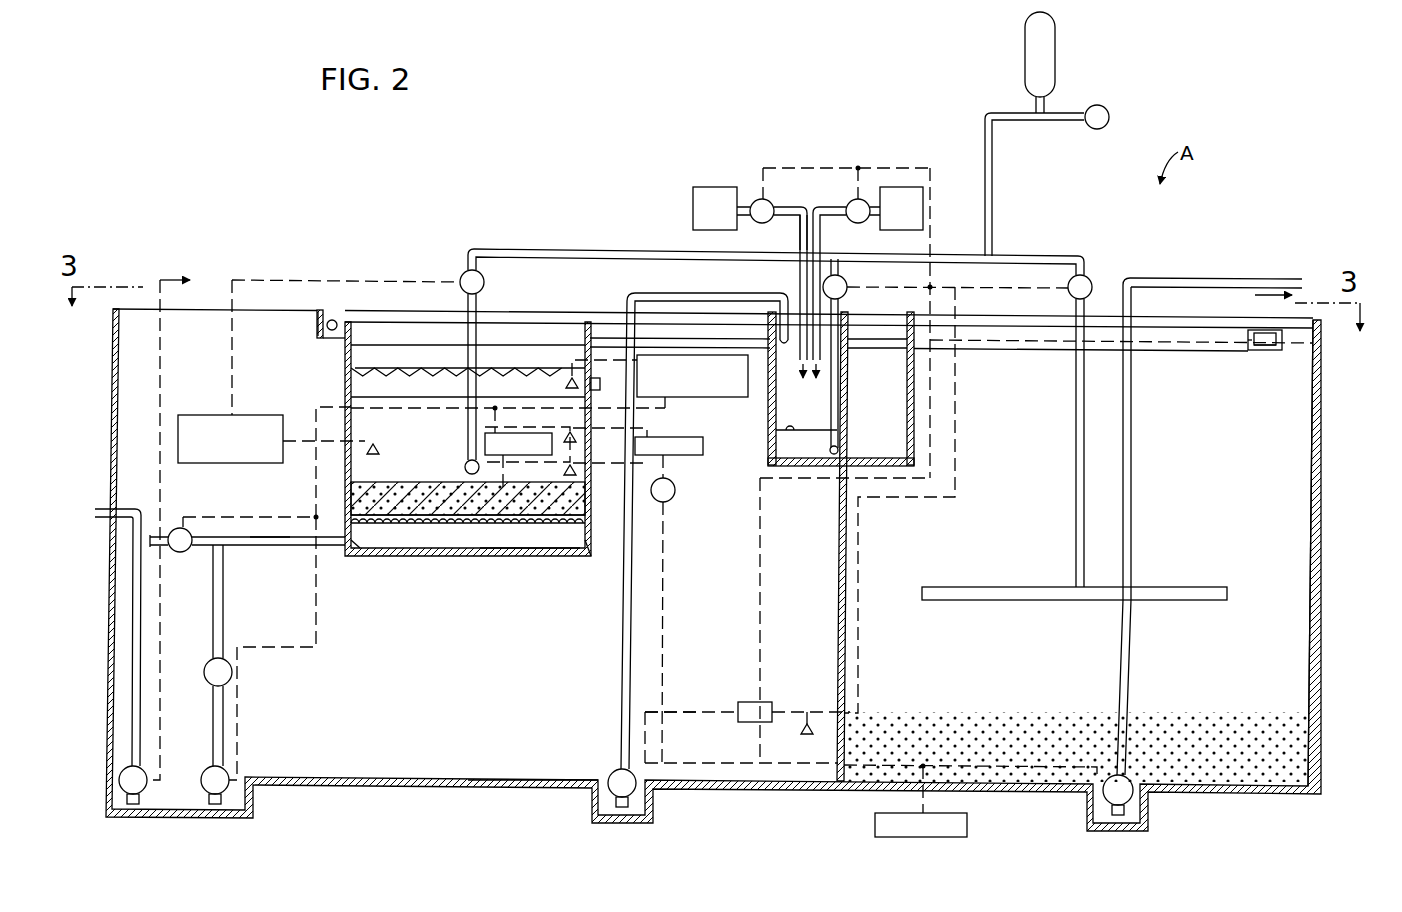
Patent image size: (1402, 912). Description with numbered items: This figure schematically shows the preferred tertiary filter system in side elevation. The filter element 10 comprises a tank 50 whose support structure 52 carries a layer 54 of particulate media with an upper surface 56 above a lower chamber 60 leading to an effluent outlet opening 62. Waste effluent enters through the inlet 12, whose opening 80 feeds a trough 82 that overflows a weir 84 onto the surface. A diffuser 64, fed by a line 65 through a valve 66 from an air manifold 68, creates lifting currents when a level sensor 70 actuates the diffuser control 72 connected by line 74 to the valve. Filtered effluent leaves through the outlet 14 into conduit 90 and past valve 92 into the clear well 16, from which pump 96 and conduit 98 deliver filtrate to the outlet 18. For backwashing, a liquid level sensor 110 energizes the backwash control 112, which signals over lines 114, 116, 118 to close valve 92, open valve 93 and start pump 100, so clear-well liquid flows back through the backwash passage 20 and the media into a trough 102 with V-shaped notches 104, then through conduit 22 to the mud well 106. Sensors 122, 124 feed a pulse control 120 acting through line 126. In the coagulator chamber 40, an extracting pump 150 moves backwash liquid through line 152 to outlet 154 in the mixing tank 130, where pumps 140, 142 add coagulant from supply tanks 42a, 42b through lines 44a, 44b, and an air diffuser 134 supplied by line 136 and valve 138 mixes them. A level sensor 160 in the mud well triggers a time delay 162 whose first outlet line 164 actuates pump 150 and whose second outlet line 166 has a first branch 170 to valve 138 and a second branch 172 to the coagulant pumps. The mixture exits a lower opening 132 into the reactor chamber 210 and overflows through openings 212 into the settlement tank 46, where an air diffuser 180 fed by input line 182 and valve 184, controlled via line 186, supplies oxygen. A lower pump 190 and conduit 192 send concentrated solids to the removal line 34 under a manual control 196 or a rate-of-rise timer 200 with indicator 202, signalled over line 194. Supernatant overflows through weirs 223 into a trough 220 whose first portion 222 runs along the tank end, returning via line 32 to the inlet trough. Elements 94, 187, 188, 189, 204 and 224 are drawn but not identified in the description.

The filter element 10 is at (343, 392).
The inlet 12 is at (320, 302).
The outlet 14 is at (252, 534).
The clear well 16 is at (108, 612).
The outlet 18 is at (97, 512).
The backwash passage 20 is at (226, 630).
The backwash liquid conduit 22 is at (593, 377).
The line 32 is at (1165, 338).
The conduit 34 is at (1248, 277).
The coagulator tank 40 is at (792, 296).
The coagulant supply tank 42a is at (712, 185).
The coagulant supply tank 42b is at (900, 185).
The line 44a is at (800, 240).
The line 44b is at (822, 238).
The settlement tank 46 is at (1295, 530).
The tank 50 is at (570, 557).
The support structure 52 is at (500, 557).
The layer of particulate media 54 is at (428, 494).
The upper surface 56 is at (355, 476).
The lower chamber 60 is at (421, 557).
The effluent outlet opening 62 is at (352, 557).
The diffuser 64 is at (471, 476).
The line 65 is at (461, 286).
The valve 66 is at (467, 256).
The air manifold 68 is at (520, 249).
The level sensor 70 is at (370, 446).
The diffuser control 72 is at (178, 432).
The line 74 is at (258, 280).
The opening 80 is at (334, 320).
The trough 82 is at (317, 333).
The weir 84 is at (352, 327).
The conduit 90 is at (268, 548).
The valve 92 is at (182, 553).
The valve 93 is at (233, 672).
The pipe stub 94 is at (150, 532).
The pump 96 is at (147, 770).
The conduit 98 is at (141, 660).
The pump 100 is at (228, 773).
The trough 102 is at (482, 364).
The V-shaped notches 104 is at (388, 374).
The mud well 106 is at (541, 786).
The liquid level sensor 110 is at (568, 376).
The backwash control 112 is at (672, 356).
The line 114 is at (667, 400).
The line 116 is at (185, 514).
The line 118 is at (238, 720).
The pulse control 120 is at (505, 492).
The sensor 122 is at (578, 438).
The sensor 124 is at (578, 471).
The line 126 is at (494, 410).
The mixing tank 130 is at (798, 468).
The lower opening 132 is at (786, 428).
The mixing device 134 is at (839, 450).
The line 136 is at (840, 310).
The valve 138 is at (847, 284).
The pump 140 is at (765, 199).
The pump 142 is at (853, 199).
The extracting pump 150 is at (612, 775).
The line 152 is at (622, 630).
The outlet 154 is at (770, 340).
The liquid level sensor 160 is at (803, 736).
The time delay 162 is at (762, 702).
The first outlet line 164 is at (694, 711).
The second outlet line 166 is at (762, 532).
The first branch 170 is at (934, 287).
The second branch 172 is at (934, 178).
The air diffuser 180 is at (1190, 587).
The input line 182 is at (1076, 487).
The valve 184 is at (1088, 280).
The line 186 is at (860, 522).
The pipe 187 is at (993, 210).
The pump 188 is at (1108, 112).
The pressure tank 189 is at (1055, 42).
The lower pump 190 is at (1132, 779).
The conduit 192 is at (1130, 440).
The line 194 is at (1008, 765).
The manual control 196 is at (968, 820).
The automatic control 200 is at (703, 450).
The indicator 202 is at (676, 492).
The control line 204 is at (664, 590).
The reactor chamber 210 is at (915, 385).
The openings 212 is at (905, 343).
The trough 220 is at (1262, 352).
The first portion 222 is at (1283, 343).
The weirs 223 is at (1248, 334).
The control line 224 is at (998, 338).